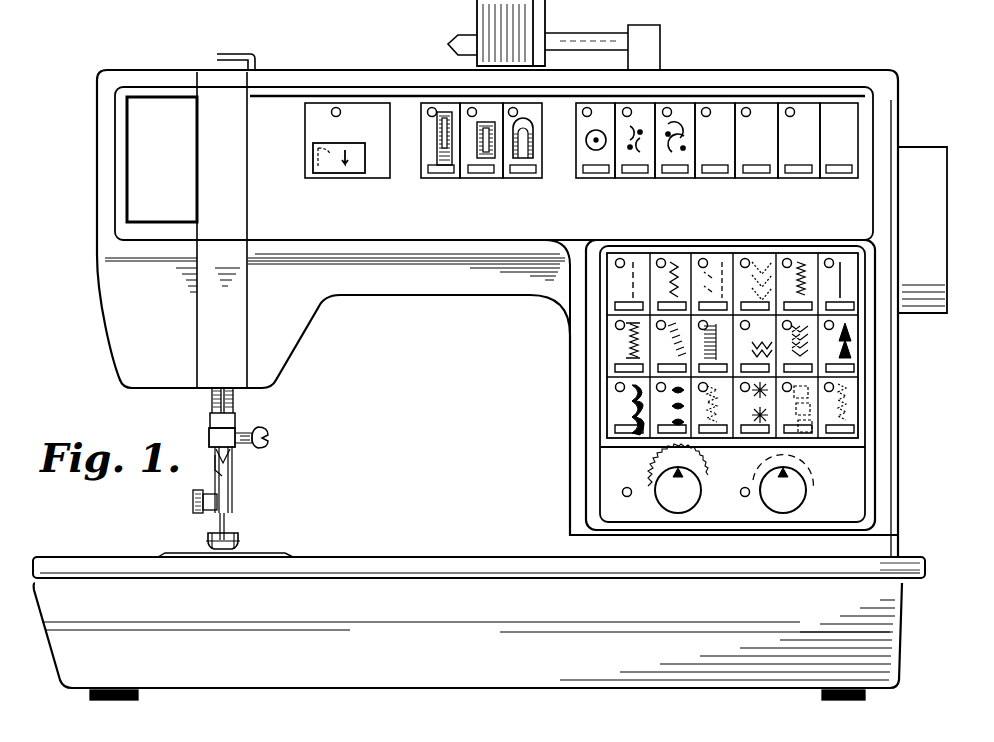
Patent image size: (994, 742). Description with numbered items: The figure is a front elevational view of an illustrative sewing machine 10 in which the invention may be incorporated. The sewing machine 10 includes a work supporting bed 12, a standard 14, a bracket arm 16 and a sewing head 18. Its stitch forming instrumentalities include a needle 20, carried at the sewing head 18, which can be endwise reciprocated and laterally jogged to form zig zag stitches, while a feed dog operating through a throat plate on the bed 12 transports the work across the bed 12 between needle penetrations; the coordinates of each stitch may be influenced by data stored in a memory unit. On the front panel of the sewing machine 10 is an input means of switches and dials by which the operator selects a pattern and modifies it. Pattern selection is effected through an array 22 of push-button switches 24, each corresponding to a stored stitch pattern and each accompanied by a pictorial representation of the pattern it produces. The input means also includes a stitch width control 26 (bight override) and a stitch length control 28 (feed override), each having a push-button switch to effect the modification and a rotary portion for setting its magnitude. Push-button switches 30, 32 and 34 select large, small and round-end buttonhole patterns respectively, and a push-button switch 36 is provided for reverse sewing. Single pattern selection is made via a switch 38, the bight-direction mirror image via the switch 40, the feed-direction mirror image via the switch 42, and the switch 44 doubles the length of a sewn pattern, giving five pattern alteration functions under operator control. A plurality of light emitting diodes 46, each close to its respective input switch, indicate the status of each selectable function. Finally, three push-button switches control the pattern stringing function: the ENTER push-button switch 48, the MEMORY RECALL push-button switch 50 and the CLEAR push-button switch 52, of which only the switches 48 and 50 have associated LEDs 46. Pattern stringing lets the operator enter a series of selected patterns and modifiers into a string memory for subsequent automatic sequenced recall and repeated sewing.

The sewing machine 10 is at (751, 65).
The work supporting bed 12 is at (378, 557).
The standard 14 is at (575, 432).
The bracket arm 16 is at (427, 280).
The sewing head 18 is at (108, 298).
The needle 20 is at (228, 481).
The array of push-button switches 22 is at (600, 350).
The push-button switches 24 is at (850, 369).
The stitch width control (bight override) 26 is at (697, 500).
The stitch length control (feed override) 28 is at (803, 500).
The push-button switch 30 is at (440, 172).
The push-button switch 32 is at (480, 172).
The push-button switch 34 is at (525, 172).
The push-button switch 36 is at (320, 173).
The switch 38 is at (590, 172).
The switch 40 is at (632, 172).
The switch 42 is at (668, 172).
The switch 44 is at (720, 172).
The light emitting diodes (LEDs) 46 is at (510, 108).
The ENTER (ENT) push-button switch 48 is at (765, 172).
The MEMORY RECALL (MRC) push-button switch 50 is at (803, 172).
The CLEAR (CLR) push-button switch 52 is at (845, 172).